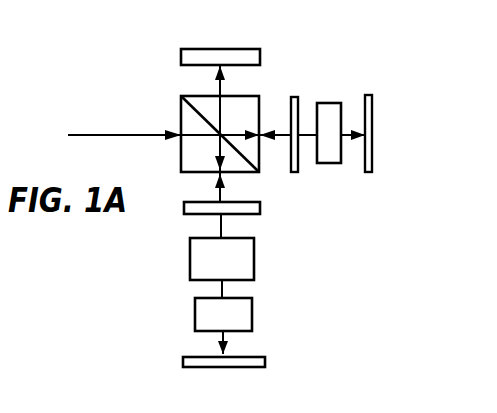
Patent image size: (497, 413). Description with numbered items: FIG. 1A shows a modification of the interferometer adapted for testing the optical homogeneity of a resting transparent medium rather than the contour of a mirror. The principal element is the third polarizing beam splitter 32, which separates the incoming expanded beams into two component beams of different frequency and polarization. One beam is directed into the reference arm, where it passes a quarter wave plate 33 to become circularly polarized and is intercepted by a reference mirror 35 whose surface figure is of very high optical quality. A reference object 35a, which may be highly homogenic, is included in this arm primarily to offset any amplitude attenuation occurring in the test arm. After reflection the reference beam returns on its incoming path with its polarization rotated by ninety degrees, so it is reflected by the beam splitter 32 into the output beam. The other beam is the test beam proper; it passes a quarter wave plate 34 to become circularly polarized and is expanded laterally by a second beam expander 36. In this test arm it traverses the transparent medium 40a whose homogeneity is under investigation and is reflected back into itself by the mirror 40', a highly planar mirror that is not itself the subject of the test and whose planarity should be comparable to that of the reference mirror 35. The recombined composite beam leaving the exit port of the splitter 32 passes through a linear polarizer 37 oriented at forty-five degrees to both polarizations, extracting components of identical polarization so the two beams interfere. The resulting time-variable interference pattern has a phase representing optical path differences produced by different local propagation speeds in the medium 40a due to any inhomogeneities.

The third polarizing beam splitter 32 is at (237, 108).
The quarter wave plate 33 is at (297, 103).
The λ/4 plate 34 is at (189, 215).
The reference mirror 35 is at (372, 103).
The reference object 35a is at (327, 163).
The second beam expander 36 is at (243, 266).
The linear polarizer 37 is at (250, 50).
The transparent medium 40a is at (245, 316).
The mirror 40' is at (240, 364).